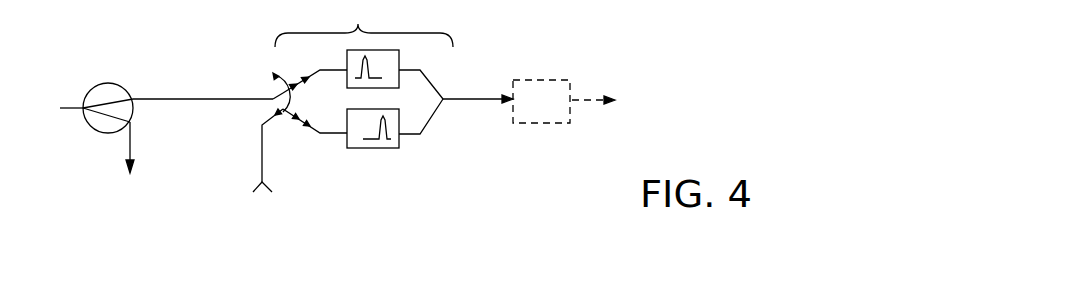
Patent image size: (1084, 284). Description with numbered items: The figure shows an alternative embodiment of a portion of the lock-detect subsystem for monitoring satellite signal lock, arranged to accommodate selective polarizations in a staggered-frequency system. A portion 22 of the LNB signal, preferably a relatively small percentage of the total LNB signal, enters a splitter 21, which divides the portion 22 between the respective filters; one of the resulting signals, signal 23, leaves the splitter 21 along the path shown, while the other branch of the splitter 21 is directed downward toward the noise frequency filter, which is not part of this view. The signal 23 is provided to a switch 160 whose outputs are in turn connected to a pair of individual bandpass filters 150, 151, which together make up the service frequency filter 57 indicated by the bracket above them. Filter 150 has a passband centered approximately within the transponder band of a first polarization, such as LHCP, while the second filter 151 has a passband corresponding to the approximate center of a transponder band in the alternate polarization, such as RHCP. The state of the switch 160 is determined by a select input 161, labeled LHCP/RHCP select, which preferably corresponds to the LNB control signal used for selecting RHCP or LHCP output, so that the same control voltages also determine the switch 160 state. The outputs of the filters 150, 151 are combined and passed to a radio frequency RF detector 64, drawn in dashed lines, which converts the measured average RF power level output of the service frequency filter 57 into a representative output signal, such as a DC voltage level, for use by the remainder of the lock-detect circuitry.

The splitter 21 is at (90, 129).
The portion of the LNB signal 22 is at (71, 106).
The signal 23 is at (165, 97).
The switch 160 is at (280, 91).
The select input 161 is at (262, 153).
The service frequency filter 57 is at (368, 91).
The first bandpass filter 150 is at (398, 56).
The second bandpass filter 151 is at (380, 147).
The RF detector 64 is at (545, 76).